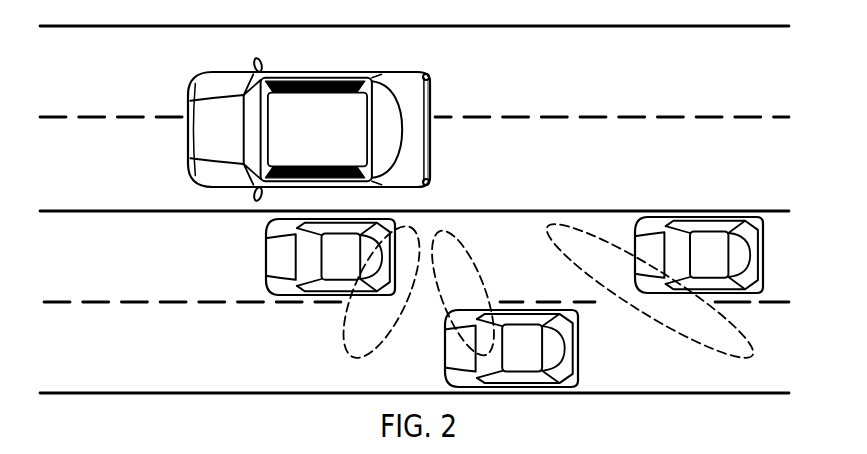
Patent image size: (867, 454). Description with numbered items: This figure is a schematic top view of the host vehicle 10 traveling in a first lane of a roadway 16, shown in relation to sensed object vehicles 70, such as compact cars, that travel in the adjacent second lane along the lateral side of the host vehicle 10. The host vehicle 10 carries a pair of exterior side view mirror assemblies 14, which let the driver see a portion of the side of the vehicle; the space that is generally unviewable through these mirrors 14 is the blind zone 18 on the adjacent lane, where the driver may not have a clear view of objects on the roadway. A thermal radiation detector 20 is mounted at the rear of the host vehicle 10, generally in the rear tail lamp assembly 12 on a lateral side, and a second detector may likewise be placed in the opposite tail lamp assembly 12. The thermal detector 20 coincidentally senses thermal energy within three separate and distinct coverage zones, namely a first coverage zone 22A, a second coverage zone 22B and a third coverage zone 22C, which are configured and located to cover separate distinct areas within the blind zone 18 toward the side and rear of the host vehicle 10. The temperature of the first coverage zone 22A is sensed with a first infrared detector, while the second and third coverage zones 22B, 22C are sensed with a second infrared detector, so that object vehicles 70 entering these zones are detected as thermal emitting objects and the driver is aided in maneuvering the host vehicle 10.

The host vehicle 10 is at (213, 88).
The rear tail lamp assembly 12 is at (429, 75).
The exterior side view mirror assembly 14 is at (263, 59).
The roadway 16 is at (77, 86).
The blind zone 18 is at (528, 272).
The thermal radiation detector 20 is at (430, 186).
The first coverage zone 22A is at (631, 302).
The second coverage zone 22B is at (440, 305).
The third coverage zone 22C is at (352, 317).
The object vehicle 70 is at (277, 256).